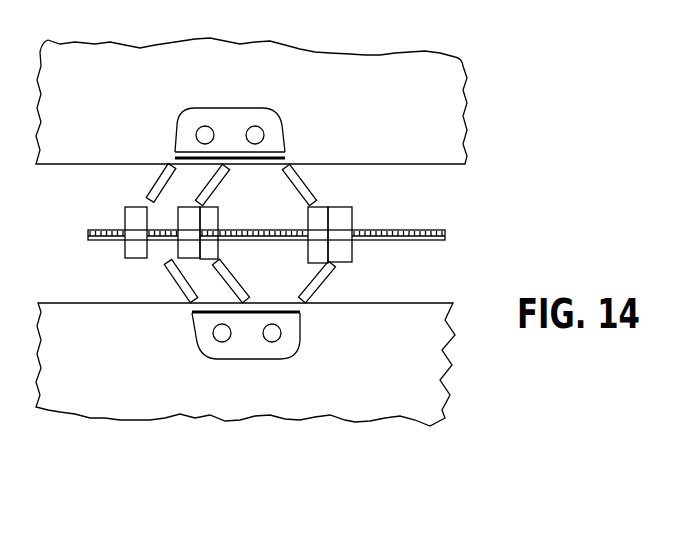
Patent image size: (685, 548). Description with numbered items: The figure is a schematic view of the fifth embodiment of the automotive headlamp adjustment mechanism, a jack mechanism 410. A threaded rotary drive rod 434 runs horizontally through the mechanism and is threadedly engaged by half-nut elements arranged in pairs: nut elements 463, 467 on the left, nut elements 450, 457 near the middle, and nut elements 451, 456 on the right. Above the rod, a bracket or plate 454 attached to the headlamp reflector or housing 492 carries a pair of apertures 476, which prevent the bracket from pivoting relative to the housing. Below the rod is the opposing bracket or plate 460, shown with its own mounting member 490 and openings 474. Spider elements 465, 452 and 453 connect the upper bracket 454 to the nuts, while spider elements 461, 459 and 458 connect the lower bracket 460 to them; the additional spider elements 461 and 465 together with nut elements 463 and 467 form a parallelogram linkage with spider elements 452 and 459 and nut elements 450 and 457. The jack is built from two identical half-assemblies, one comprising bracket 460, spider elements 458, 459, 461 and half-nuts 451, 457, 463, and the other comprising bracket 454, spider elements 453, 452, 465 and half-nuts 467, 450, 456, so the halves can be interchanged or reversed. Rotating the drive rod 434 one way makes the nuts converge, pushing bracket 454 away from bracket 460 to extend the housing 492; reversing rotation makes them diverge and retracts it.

The jack mechanism 410 is at (524, 194).
The threaded rotary drive rod 434 is at (407, 245).
The nut element 450 is at (184, 270).
The nut element 451 is at (330, 207).
The spider element 452 is at (214, 190).
The spider element 453 is at (299, 180).
The bracket or plate 454 is at (284, 122).
The nut element 456 is at (342, 221).
The nut element 457 is at (160, 265).
The spider element 458 is at (321, 283).
The spider element 459 is at (238, 282).
The bracket or plate 460 is at (298, 332).
The spider element 461 is at (180, 298).
The nut element 463 is at (124, 210).
The spider element 465 is at (161, 176).
The nut element 467 is at (148, 205).
The mounting holes 474 is at (229, 336).
The apertures 476 is at (253, 133).
The lower panel 490 is at (163, 396).
The headlamp reflector or housing 492 is at (113, 93).